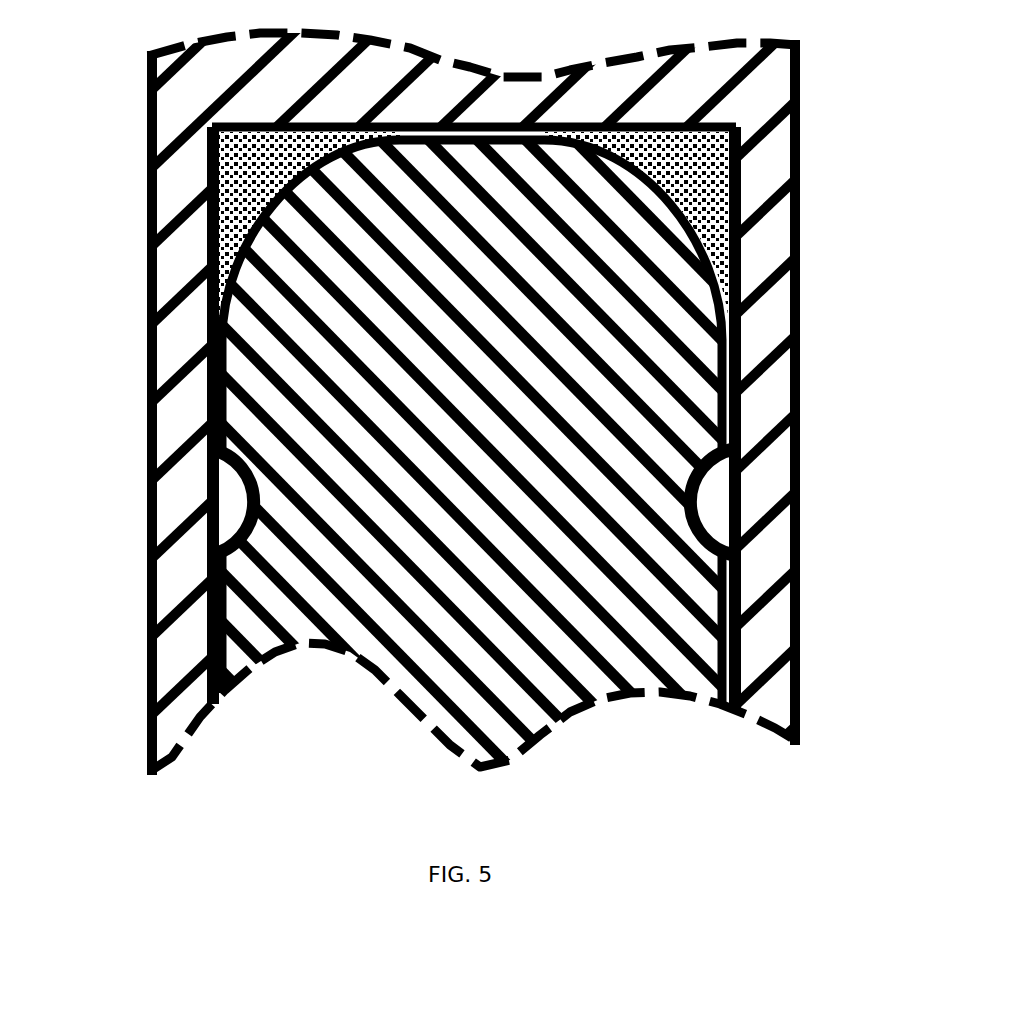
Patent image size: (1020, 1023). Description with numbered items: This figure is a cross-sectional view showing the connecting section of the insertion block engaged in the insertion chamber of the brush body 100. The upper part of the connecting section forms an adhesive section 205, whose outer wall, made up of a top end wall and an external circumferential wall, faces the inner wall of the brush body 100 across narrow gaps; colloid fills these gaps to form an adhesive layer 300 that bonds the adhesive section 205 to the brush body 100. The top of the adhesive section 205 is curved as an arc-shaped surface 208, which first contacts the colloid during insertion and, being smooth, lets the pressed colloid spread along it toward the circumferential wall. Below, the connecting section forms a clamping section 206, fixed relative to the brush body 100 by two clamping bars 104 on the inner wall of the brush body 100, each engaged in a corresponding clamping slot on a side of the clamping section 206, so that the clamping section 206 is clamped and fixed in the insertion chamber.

The brush body 100 is at (180, 277).
The clamping bar 104 is at (690, 490).
The adhesive section 205 is at (670, 310).
The clamping section 206 is at (255, 594).
The arc-shaped surface 208 is at (240, 117).
The adhesive layer 300 is at (730, 148).